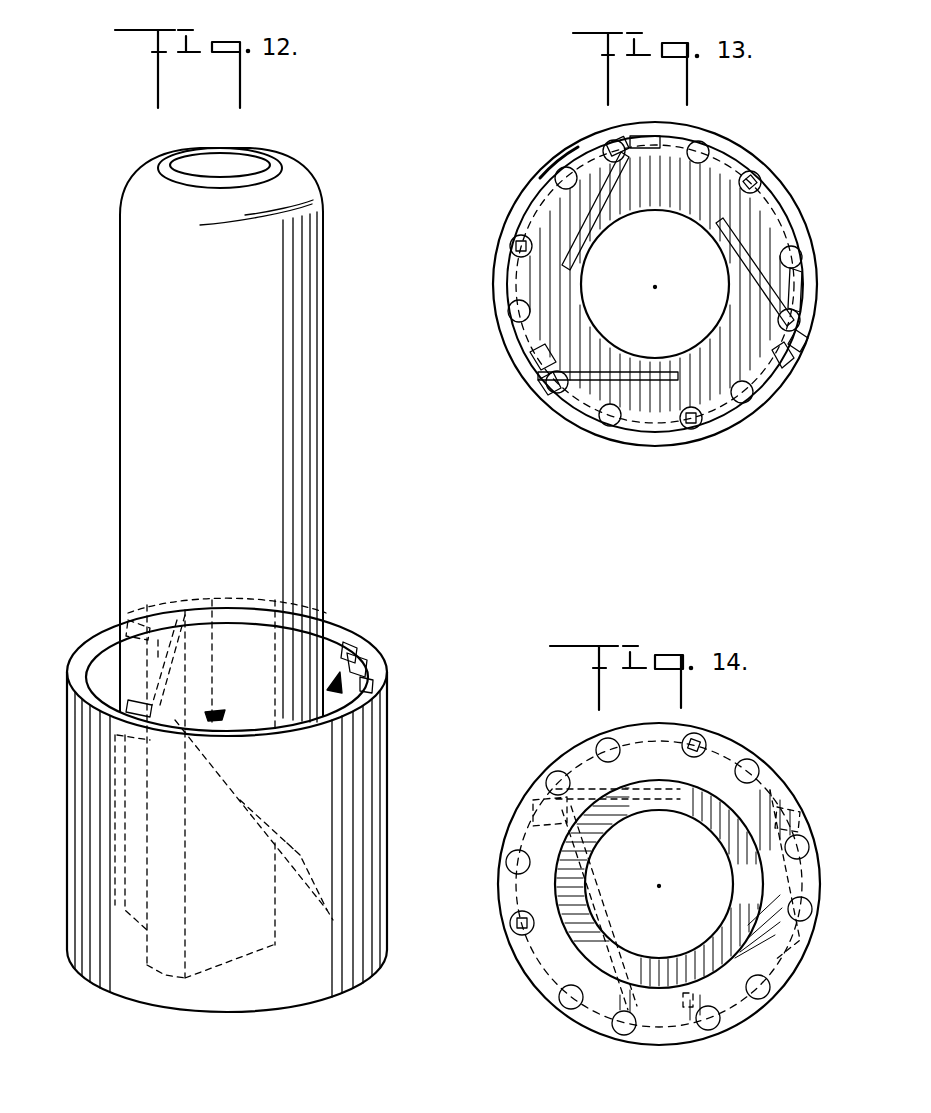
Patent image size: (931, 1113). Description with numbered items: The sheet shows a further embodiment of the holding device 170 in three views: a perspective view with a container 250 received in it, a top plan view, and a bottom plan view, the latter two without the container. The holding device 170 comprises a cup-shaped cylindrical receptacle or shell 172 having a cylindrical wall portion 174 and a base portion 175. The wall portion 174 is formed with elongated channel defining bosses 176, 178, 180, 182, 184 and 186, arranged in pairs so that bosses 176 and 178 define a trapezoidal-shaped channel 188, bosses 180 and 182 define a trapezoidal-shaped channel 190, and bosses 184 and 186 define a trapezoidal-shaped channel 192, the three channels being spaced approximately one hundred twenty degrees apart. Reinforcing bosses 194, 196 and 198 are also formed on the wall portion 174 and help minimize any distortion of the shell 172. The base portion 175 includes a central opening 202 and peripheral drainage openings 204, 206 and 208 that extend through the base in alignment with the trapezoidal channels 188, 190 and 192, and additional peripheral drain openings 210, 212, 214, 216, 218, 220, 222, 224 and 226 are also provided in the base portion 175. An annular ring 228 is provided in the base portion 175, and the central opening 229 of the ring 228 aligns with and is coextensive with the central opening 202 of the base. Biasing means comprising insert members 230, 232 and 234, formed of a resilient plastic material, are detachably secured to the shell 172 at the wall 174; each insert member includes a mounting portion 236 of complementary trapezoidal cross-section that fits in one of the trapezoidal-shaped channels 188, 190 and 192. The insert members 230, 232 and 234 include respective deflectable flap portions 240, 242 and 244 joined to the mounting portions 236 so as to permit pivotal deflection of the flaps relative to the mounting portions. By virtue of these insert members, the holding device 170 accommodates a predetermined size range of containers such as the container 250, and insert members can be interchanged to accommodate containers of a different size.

In FIG. 12, the holding device 170 is at (396, 650).
In FIG. 13, the holding device 170 is at (790, 136).
In FIG. 14, the holding device 170 is at (790, 742).
In FIG. 12, the shell 172 is at (392, 766).
In FIG. 13, the shell 172 is at (806, 230).
In FIG. 14, the shell 172 is at (802, 766).
In FIG. 12, the cylindrical wall portion 174 is at (388, 814).
In FIG. 13, the cylindrical wall portion 174 is at (500, 215).
In FIG. 14, the cylindrical wall portion 174 is at (800, 788).
In FIG. 13, the base portion 175 is at (780, 385).
In FIG. 14, the base portion 175 is at (790, 950).
In FIG. 12, the channel defining boss 176 is at (128, 618).
In FIG. 13, the channel defining boss 176 is at (566, 160).
In FIG. 12, the channel defining boss 178 is at (208, 600).
In FIG. 13, the channel defining boss 178 is at (648, 136).
In FIG. 12, the channel defining boss 180 is at (357, 645).
In FIG. 13, the channel defining boss 180 is at (802, 288).
In FIG. 12, the channel defining boss 182 is at (372, 689).
In FIG. 13, the channel defining boss 182 is at (790, 362).
In FIG. 12, the channel defining boss 184 is at (215, 714).
In FIG. 13, the channel defining boss 184 is at (566, 395).
In FIG. 12, the channel defining boss 186 is at (128, 706).
In FIG. 13, the channel defining boss 186 is at (530, 362).
In FIG. 13, the trapezoidal-shaped channel 188 is at (604, 140).
In FIG. 13, the trapezoidal-shaped channel 190 is at (803, 302).
In FIG. 13, the trapezoidal-shaped channel 192 is at (540, 385).
In FIG. 13, the reinforcing boss 194 is at (758, 184).
In FIG. 14, the reinforcing boss 194 is at (766, 990).
In FIG. 13, the reinforcing boss 196 is at (696, 426).
In FIG. 14, the reinforcing boss 196 is at (692, 736).
In FIG. 13, the reinforcing boss 198 is at (518, 252).
In FIG. 14, the reinforcing boss 198 is at (524, 932).
In FIG. 13, the central opening 202 is at (680, 339).
In FIG. 13, the peripheral drainage opening 204 is at (608, 140).
In FIG. 14, the peripheral drainage opening 204 is at (622, 1034).
In FIG. 13, the peripheral drainage opening 206 is at (800, 321).
In FIG. 14, the peripheral drainage opening 206 is at (806, 848).
In FIG. 13, the peripheral drainage opening 208 is at (556, 396).
In FIG. 14, the peripheral drainage opening 208 is at (553, 776).
In FIG. 13, the peripheral drain opening 210 is at (755, 186).
In FIG. 14, the peripheral drain opening 210 is at (764, 995).
In FIG. 13, the peripheral drain opening 212 is at (800, 258).
In FIG. 14, the peripheral drain opening 212 is at (808, 912).
In FIG. 13, the peripheral drain opening 214 is at (748, 400).
In FIG. 14, the peripheral drain opening 214 is at (750, 766).
In FIG. 13, the peripheral drain opening 216 is at (689, 430).
In FIG. 14, the peripheral drain opening 216 is at (702, 740).
In FIG. 13, the peripheral drain opening 218 is at (608, 424).
In FIG. 14, the peripheral drain opening 218 is at (603, 748).
In FIG. 13, the peripheral drain opening 220 is at (509, 310).
In FIG. 14, the peripheral drain opening 220 is at (506, 862).
In FIG. 13, the peripheral drain opening 222 is at (512, 246).
In FIG. 14, the peripheral drain opening 222 is at (510, 925).
In FIG. 13, the peripheral drain opening 224 is at (558, 174).
In FIG. 14, the peripheral drain opening 224 is at (568, 1008).
In FIG. 13, the peripheral drain opening 226 is at (705, 148).
In FIG. 14, the peripheral drain opening 226 is at (712, 1028).
In FIG. 14, the annular ring 228 is at (652, 972).
In FIG. 14, the central opening 229 is at (674, 876).
In FIG. 12, the insert member 230 is at (165, 600).
In FIG. 13, the insert member 230 is at (606, 218).
In FIG. 12, the insert member 232 is at (372, 673).
In FIG. 13, the insert member 232 is at (770, 296).
In FIG. 12, the insert member 234 is at (160, 715).
In FIG. 13, the insert member 234 is at (604, 366).
In FIG. 12, the mounting portion 236 is at (150, 965).
In FIG. 13, the mounting portion 236 is at (622, 140).
In FIG. 13, the deflectable flap portion 240 is at (588, 234).
In FIG. 12, the deflectable flap portion 242 is at (303, 858).
In FIG. 13, the deflectable flap portion 242 is at (745, 255).
In FIG. 12, the deflectable flap portion 244 is at (185, 978).
In FIG. 13, the deflectable flap portion 244 is at (628, 382).
In FIG. 12, the container 250 is at (120, 436).